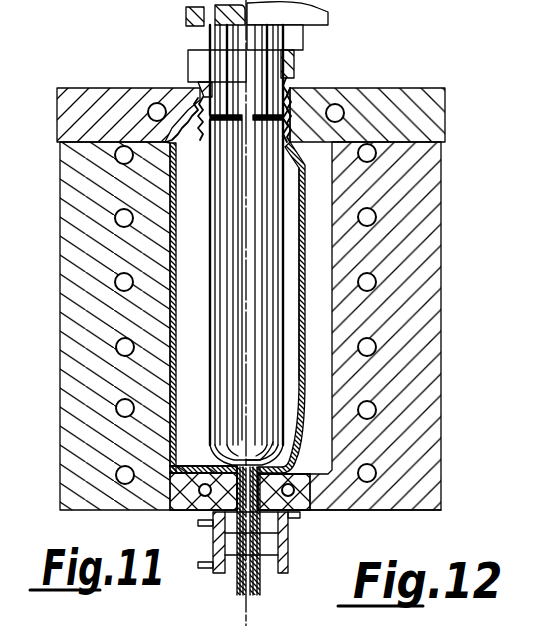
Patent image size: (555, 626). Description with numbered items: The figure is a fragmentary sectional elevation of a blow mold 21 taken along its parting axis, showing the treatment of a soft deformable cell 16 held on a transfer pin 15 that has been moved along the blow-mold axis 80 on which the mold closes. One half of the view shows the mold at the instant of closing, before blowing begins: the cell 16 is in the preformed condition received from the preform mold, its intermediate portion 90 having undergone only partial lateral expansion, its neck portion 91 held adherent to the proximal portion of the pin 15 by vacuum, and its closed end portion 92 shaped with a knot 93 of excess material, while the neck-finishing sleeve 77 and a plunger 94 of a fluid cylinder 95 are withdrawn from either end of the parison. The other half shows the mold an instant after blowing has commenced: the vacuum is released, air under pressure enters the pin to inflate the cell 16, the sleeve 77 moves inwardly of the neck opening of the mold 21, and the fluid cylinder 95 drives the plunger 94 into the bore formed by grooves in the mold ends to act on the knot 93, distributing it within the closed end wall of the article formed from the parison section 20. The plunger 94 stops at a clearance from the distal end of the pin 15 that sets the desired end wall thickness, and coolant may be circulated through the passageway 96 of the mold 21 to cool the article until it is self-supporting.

In FIG. 11, the pin 15 is at (228, 245).
In FIG. 12, the pin 15 is at (266, 238).
In FIG. 12, the cell 16 is at (296, 274).
In FIG. 11, the parison section 20 is at (174, 212).
In FIG. 11, the blow mold 21 is at (50, 293).
In FIG. 12, the blow mold 21 is at (450, 268).
In FIG. 11, the neck-finishing sleeve 77 is at (202, 96).
In FIG. 12, the neck-finishing sleeve 77 is at (303, 60).
In FIG. 11, the blow-mold axis 80 is at (244, 582).
In FIG. 12, the blow-mold axis 80 is at (253, 583).
In FIG. 12, the intermediate portion 90 is at (303, 320).
In FIG. 12, the neck portion 91 is at (292, 107).
In FIG. 12, the closed end portion 92 is at (258, 462).
In FIG. 12, the knot 93 is at (392, 510).
In FIG. 11, the plunger 94 is at (234, 471).
In FIG. 12, the plunger 94 is at (340, 505).
In FIG. 11, the fluid cylinder 95 is at (224, 578).
In FIG. 12, the fluid cylinder 95 is at (273, 578).
In FIG. 11, the passageway 96 is at (115, 212).
In FIG. 12, the passageway 96 is at (344, 112).